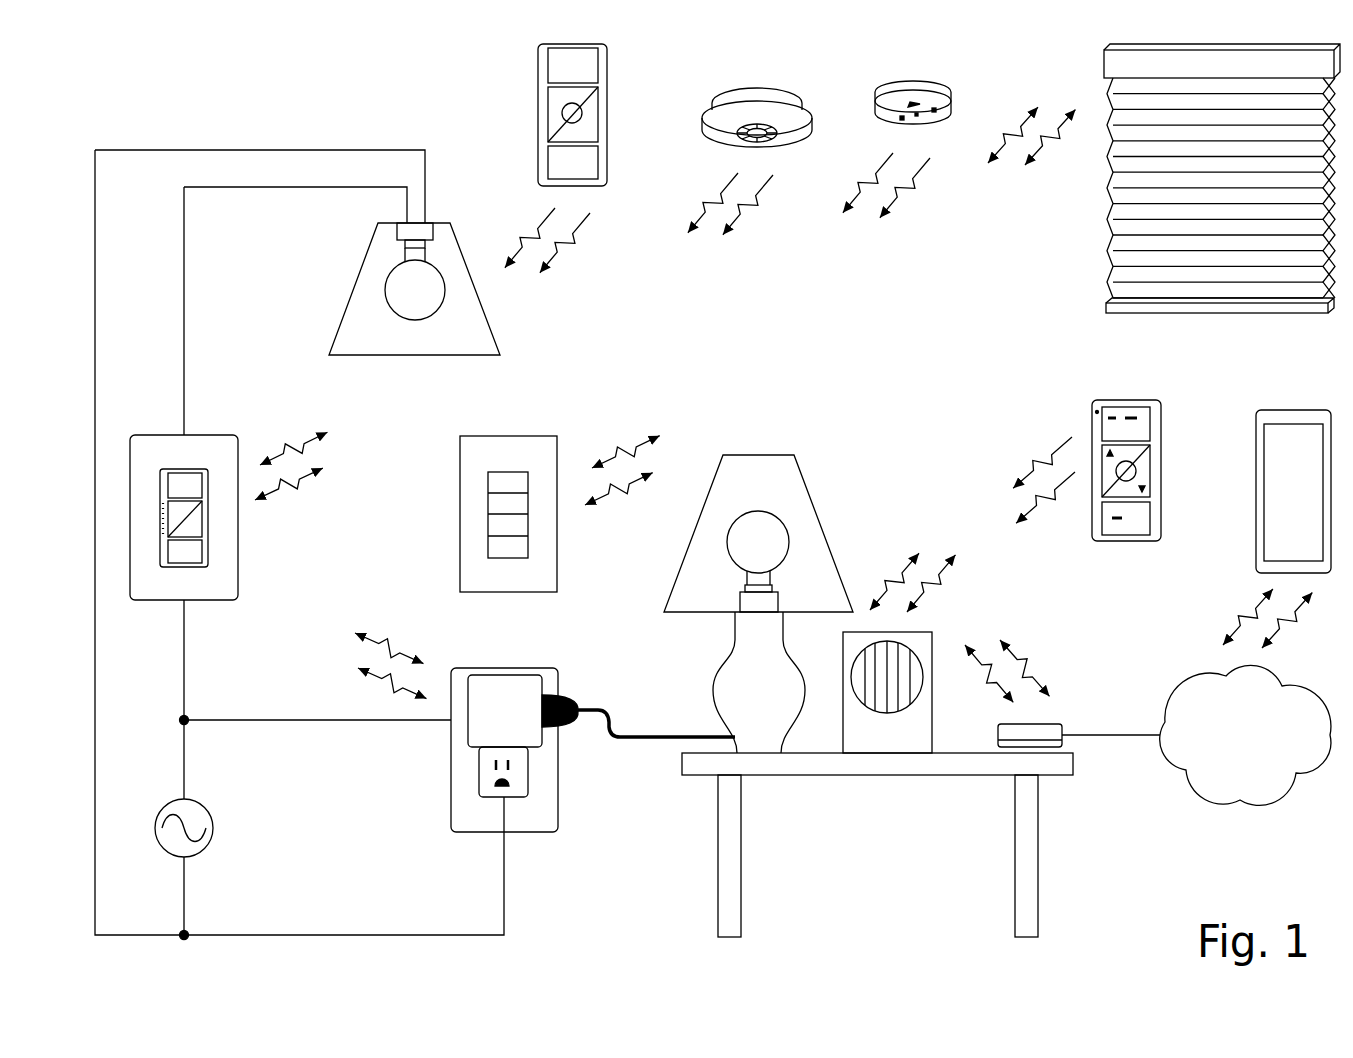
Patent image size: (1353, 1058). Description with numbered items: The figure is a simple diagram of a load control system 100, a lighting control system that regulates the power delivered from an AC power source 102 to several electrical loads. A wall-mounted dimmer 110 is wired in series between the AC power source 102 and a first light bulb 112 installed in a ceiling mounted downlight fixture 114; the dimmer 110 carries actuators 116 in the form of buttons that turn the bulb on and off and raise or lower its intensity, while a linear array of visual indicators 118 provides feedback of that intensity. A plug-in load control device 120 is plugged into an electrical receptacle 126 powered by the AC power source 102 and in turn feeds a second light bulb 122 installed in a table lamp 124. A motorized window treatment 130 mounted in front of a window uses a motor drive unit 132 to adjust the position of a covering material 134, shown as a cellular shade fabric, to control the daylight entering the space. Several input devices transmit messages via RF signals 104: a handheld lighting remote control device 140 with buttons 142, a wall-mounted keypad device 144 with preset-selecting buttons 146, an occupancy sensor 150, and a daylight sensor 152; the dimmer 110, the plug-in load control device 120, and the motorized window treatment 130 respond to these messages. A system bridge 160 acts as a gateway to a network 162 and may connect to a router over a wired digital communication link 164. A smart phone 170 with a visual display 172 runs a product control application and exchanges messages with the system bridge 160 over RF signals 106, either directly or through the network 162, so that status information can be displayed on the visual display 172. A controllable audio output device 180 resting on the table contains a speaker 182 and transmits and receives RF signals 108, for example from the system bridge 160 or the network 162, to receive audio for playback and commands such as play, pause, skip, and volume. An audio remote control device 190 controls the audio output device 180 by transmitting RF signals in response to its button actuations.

The load control system 100 is at (248, 93).
The AC power source 102 is at (200, 811).
The RF signals 104 is at (355, 688).
The RF signals 106 is at (1217, 600).
The RF signals 108 is at (940, 540).
The wall-mounted dimmer 110 is at (221, 477).
The first light bulb 112 is at (407, 288).
The ceiling mounted downlight fixture 114 is at (417, 286).
The actuators 116 is at (183, 490).
The visual indicators 118 is at (152, 518).
The plug-in load control device 120 is at (480, 728).
The second light bulb 122 is at (763, 543).
The table lamp 124 is at (774, 604).
The electrical receptacle 126 is at (549, 796).
The motorized window treatment 130 is at (1155, 178).
The motor drive unit 132 is at (1118, 64).
The covering material 134 is at (1137, 217).
The lighting remote control device 140 is at (541, 161).
The buttons 142 is at (563, 58).
The keypad device 144 is at (524, 481).
The buttons 146 is at (496, 547).
The occupancy sensor 150 is at (728, 120).
The daylight sensor 152 is at (903, 110).
The system bridge 160 is at (1045, 728).
The network 162 is at (1272, 790).
The wired digital communication link 164 is at (1132, 737).
The smart phone 170 is at (1272, 468).
The visual display 172 is at (1293, 498).
The controllable audio output device 180 is at (949, 728).
The speaker 182 is at (907, 668).
The audio remote control device 190 is at (1073, 410).